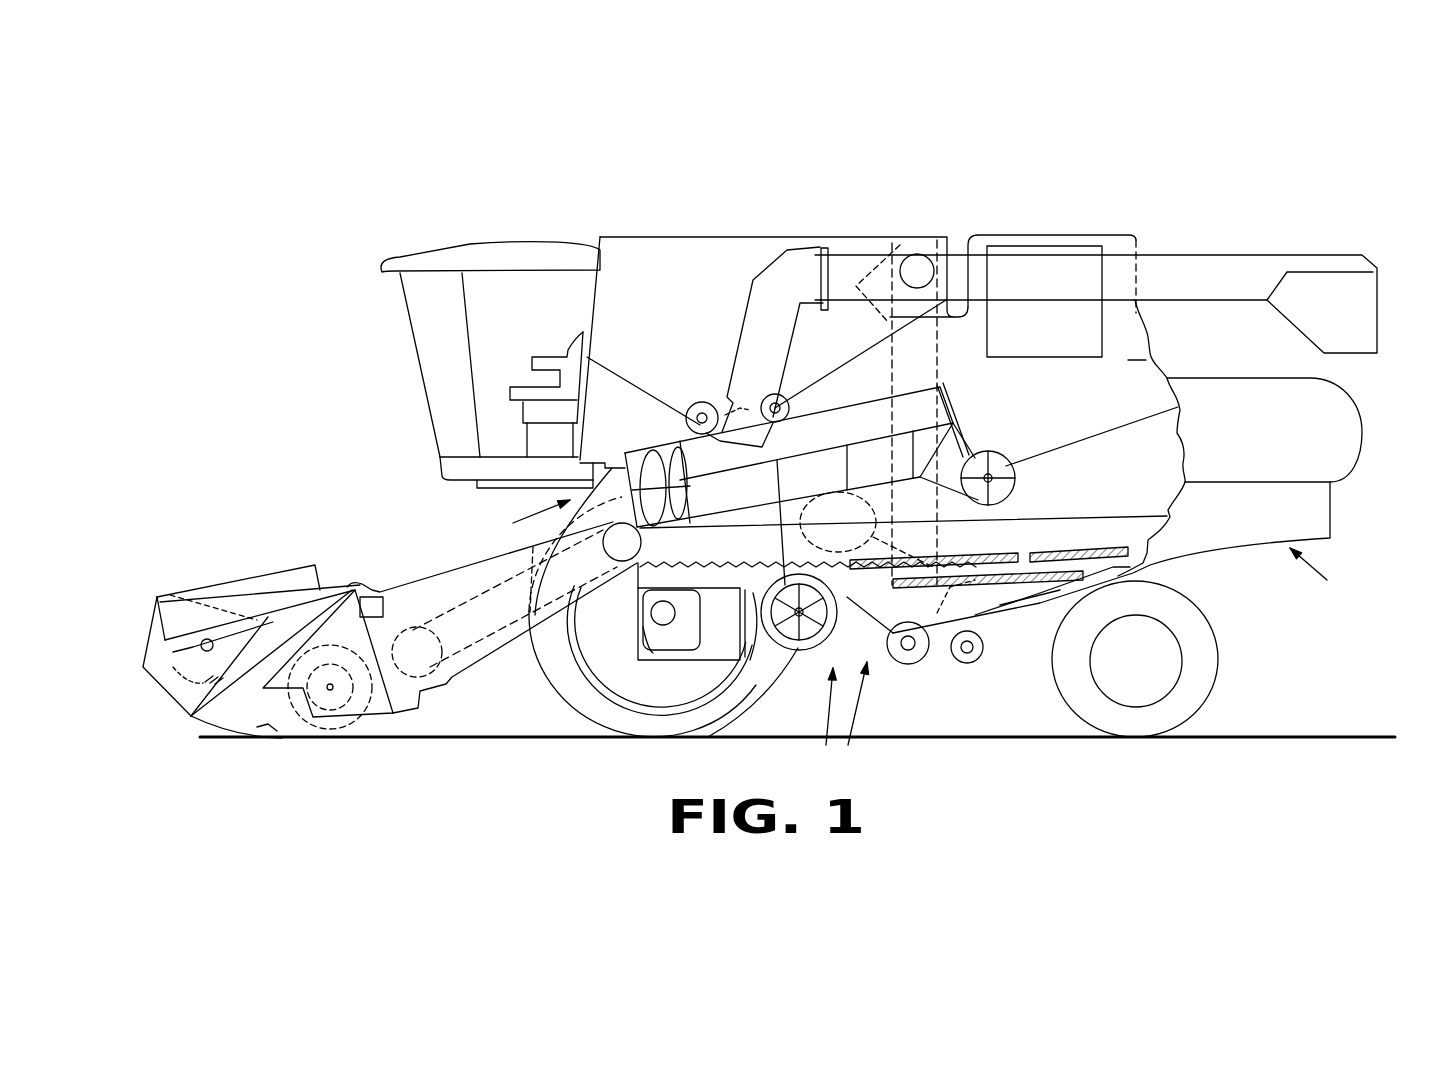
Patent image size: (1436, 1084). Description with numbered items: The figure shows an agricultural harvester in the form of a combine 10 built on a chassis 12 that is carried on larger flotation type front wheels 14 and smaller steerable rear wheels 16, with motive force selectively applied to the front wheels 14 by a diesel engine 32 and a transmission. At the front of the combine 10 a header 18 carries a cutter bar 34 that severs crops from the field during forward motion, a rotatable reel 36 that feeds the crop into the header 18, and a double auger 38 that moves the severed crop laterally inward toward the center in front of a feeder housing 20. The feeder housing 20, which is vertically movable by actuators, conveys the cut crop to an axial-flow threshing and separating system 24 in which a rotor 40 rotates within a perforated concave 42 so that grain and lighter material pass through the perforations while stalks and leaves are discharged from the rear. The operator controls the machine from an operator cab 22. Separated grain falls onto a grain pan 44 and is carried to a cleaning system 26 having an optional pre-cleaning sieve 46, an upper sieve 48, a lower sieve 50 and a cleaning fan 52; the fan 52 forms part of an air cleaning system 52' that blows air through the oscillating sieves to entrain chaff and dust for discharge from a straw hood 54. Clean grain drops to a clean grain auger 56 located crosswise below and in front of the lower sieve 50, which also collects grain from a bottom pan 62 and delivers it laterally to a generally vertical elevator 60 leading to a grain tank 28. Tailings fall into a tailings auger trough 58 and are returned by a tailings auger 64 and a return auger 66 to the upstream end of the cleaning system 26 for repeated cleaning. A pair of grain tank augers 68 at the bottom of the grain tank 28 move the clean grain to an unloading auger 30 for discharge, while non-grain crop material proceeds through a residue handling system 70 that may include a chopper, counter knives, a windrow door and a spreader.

The combine 10 is at (478, 230).
The chassis 12 is at (1152, 573).
The front wheels 14 is at (567, 697).
The rear wheels 16 is at (1215, 677).
The header 18 is at (241, 562).
The feeder housing 20 is at (457, 568).
The operator cab 22 is at (413, 338).
The threshing and separating system 24 is at (527, 520).
The cleaning system 26 is at (837, 721).
The grain tank 28 is at (654, 238).
The unloading auger 30 is at (1229, 259).
The diesel engine 32 is at (1032, 248).
The cutter bar 34 is at (262, 737).
The rotatable reel 36 is at (152, 634).
The double auger 38 is at (337, 712).
The rotor 40 is at (643, 457).
The perforated concave 42 is at (837, 438).
The grain pan 44 is at (630, 590).
The pre-cleaning sieve 46 is at (941, 558).
The upper sieve 48 is at (1040, 553).
The lower sieve 50 is at (1018, 592).
The cleaning fan 52 is at (799, 652).
The air cleaning system 52' is at (781, 706).
The straw hood 54 is at (1345, 417).
The clean grain auger 56 is at (908, 664).
The tailings auger trough 58 is at (1072, 590).
The elevator 60 is at (941, 363).
The bottom pan 62 is at (1058, 593).
The tailings auger 64 is at (965, 663).
The return auger 66 is at (907, 475).
The grain tank augers 68 is at (700, 404).
The residue handling system 70 is at (1338, 587).